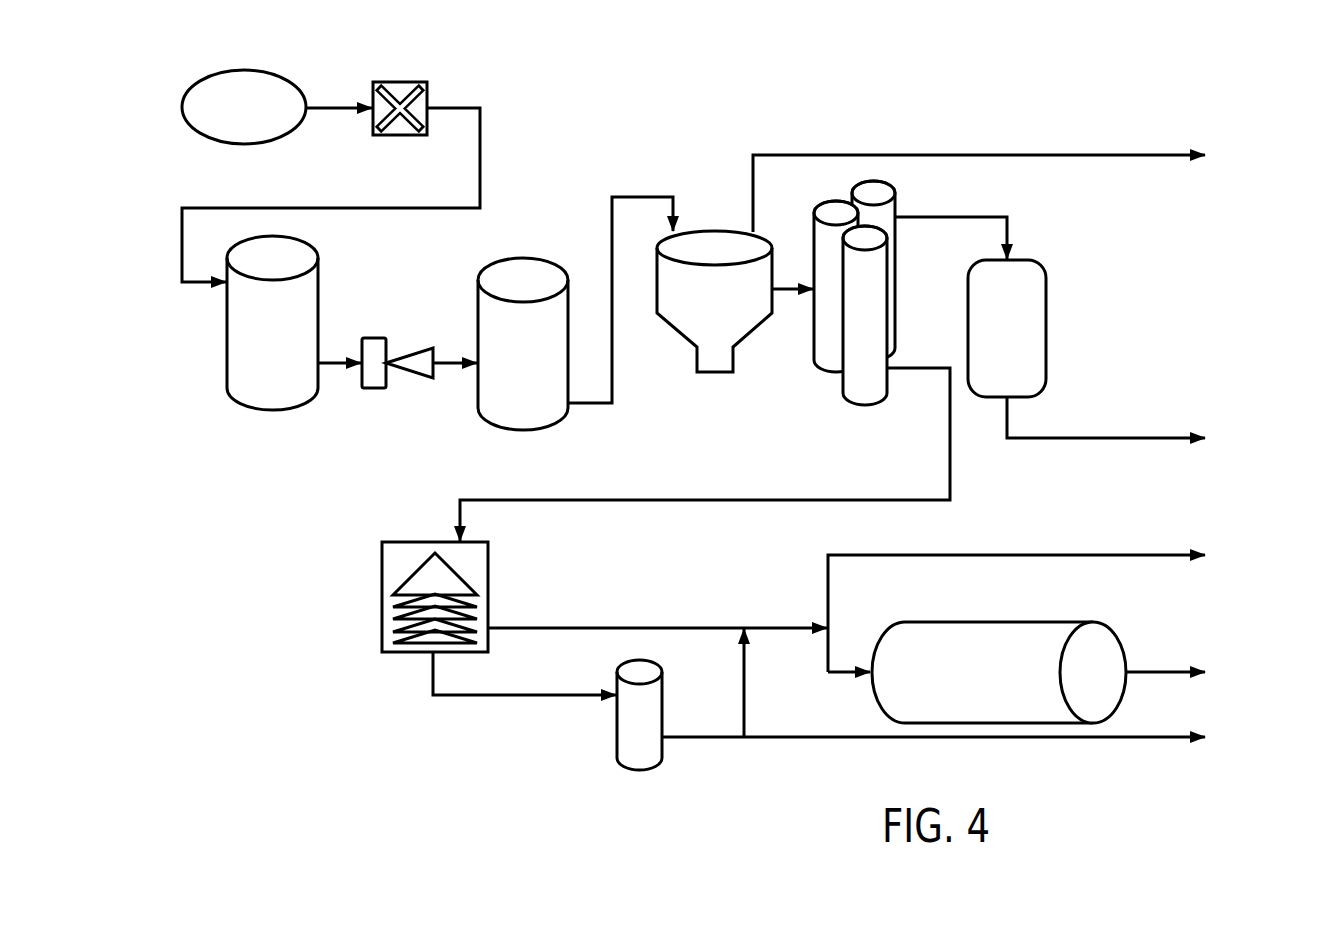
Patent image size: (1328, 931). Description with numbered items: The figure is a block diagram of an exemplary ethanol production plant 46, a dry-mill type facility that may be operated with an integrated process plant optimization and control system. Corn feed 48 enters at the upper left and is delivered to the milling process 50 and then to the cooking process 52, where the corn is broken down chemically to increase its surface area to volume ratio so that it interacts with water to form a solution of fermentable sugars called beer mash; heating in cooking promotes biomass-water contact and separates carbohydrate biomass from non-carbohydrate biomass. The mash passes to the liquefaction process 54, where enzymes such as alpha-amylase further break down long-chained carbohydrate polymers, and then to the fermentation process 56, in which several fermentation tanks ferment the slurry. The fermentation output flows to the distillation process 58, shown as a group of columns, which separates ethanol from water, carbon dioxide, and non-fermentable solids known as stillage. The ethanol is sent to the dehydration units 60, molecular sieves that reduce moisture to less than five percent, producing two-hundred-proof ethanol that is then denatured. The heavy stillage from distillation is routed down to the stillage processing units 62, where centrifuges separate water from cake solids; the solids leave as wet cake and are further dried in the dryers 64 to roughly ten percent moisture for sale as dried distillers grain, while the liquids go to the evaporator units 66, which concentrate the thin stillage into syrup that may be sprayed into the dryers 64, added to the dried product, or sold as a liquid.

The ethanol production plant 46 is at (1267, 98).
The corn feed 48 is at (202, 85).
The milling process 50 is at (400, 82).
The cooking process 52 is at (227, 325).
The liquefaction process 54 is at (477, 330).
The fermentation process 56 is at (772, 262).
The distillation process 58 is at (838, 205).
The dehydration units 60 is at (1040, 265).
The stillage processing units 62 is at (488, 553).
The dryers 64 is at (1070, 622).
The evaporator units 66 is at (665, 685).